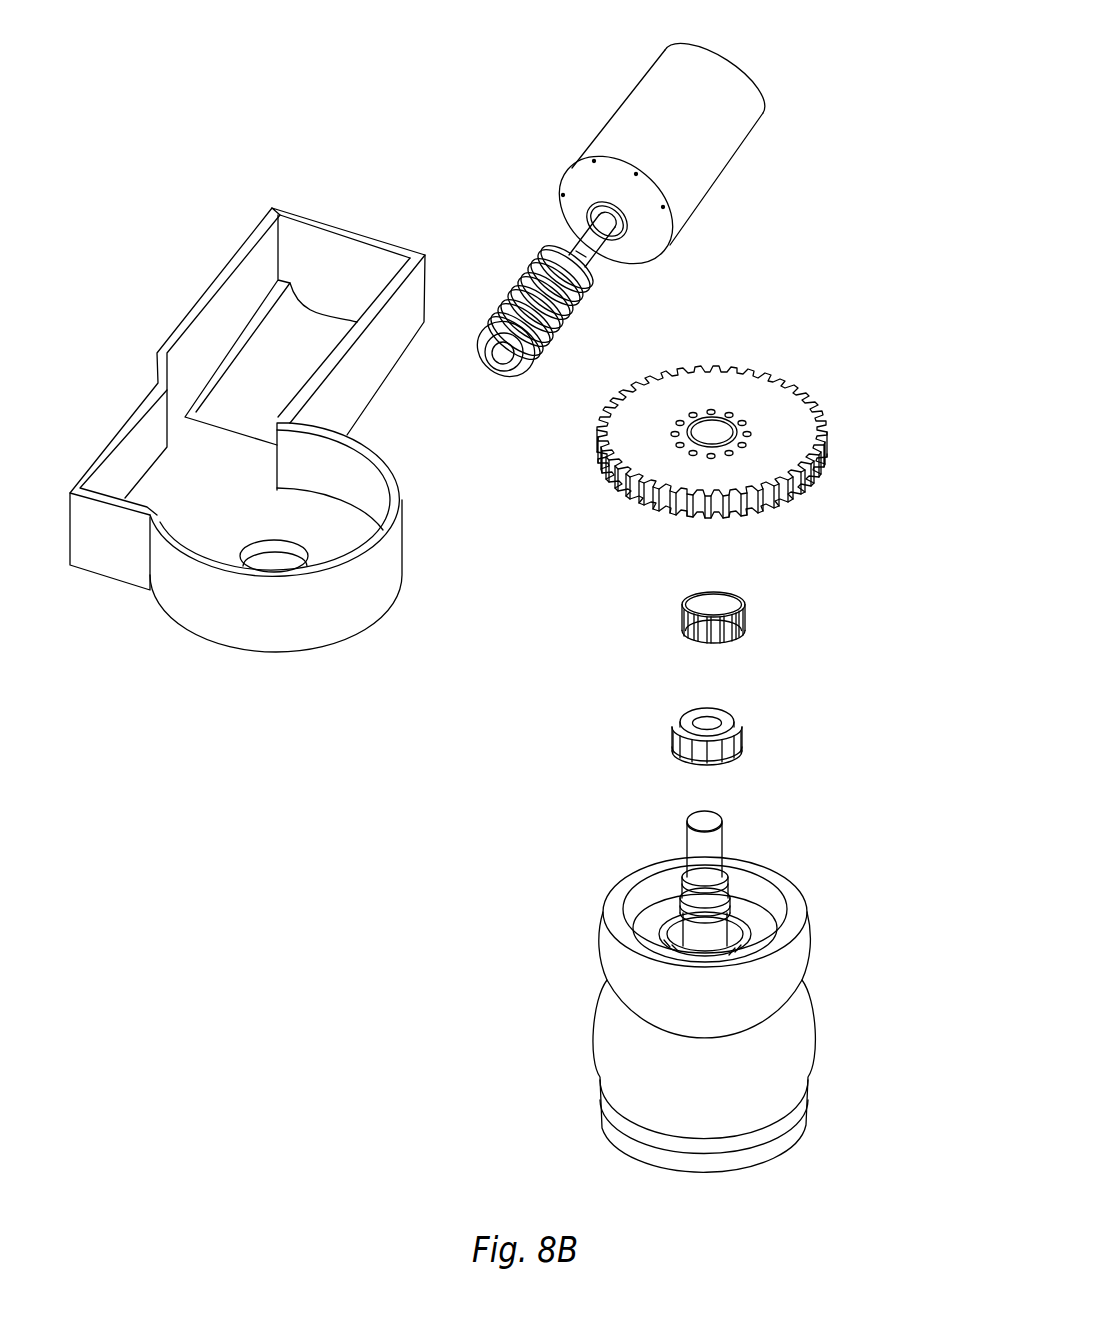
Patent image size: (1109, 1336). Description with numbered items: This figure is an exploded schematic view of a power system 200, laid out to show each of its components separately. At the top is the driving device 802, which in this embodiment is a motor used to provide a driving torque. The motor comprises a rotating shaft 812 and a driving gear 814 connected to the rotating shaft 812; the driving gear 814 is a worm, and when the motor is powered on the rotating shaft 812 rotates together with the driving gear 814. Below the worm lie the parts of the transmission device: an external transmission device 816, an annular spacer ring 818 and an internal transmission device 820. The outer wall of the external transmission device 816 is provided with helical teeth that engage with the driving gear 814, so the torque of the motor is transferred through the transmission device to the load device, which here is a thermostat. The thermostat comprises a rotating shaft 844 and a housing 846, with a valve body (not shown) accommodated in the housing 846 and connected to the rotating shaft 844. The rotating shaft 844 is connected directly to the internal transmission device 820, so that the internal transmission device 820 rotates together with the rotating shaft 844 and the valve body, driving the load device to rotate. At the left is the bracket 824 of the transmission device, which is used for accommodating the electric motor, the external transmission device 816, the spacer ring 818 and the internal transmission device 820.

The power system 200 is at (897, 88).
The driving device 802 is at (690, 75).
The rotating shaft 812 is at (572, 238).
The driving gear 814 is at (492, 355).
The external transmission device 816 is at (777, 402).
The annular spacer ring 818 is at (745, 618).
The internal transmission device 820 is at (743, 737).
The rotating shaft 844 is at (715, 847).
The housing 846 is at (803, 1028).
The bracket 824 is at (183, 343).